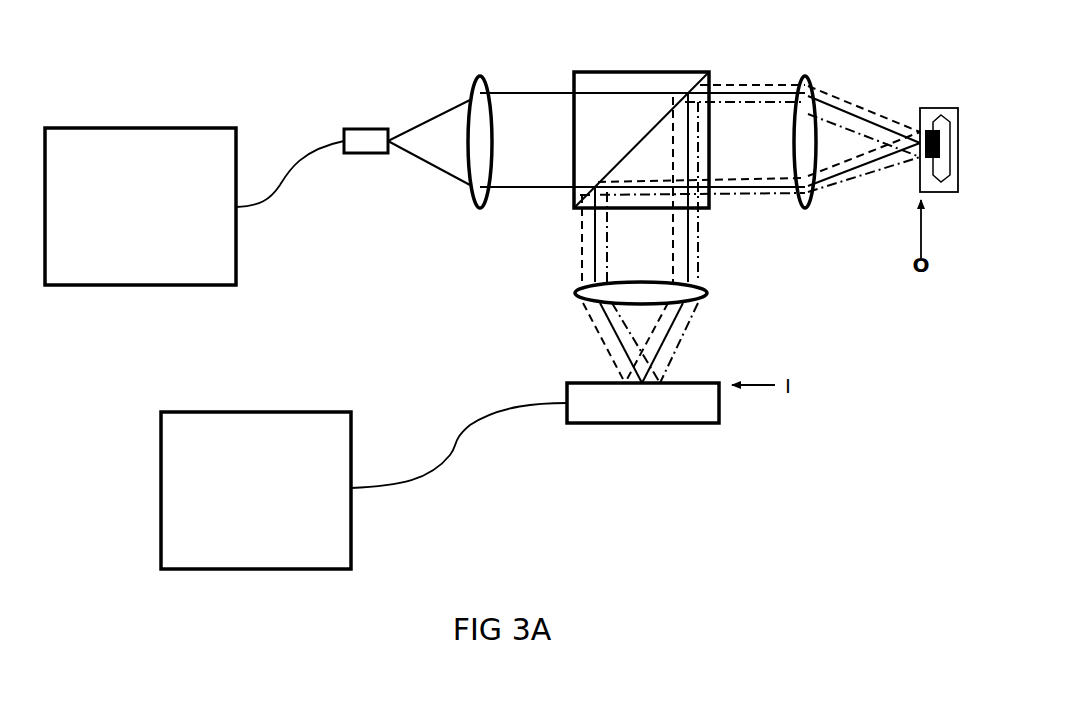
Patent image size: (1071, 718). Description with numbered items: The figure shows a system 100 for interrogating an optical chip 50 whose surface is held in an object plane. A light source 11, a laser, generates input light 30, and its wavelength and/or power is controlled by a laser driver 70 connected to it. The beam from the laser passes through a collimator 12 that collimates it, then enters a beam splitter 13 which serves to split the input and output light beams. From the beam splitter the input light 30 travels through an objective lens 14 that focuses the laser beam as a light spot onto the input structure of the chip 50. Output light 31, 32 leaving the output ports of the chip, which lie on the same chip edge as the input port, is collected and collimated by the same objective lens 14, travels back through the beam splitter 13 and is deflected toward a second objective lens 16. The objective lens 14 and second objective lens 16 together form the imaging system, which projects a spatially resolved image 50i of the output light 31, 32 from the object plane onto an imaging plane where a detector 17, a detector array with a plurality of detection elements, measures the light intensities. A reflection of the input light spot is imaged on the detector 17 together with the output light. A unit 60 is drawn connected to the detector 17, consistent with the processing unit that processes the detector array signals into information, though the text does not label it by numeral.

The system 100 is at (145, 80).
The laser driver 70 is at (184, 162).
The light source 11 is at (353, 125).
The collimator 12 is at (468, 68).
The beam splitter 13 is at (629, 58).
The objective lens 14 is at (790, 67).
The input light 30 is at (865, 113).
The output light 32 is at (828, 90).
The output light 31 is at (828, 190).
The optical chip 50 is at (925, 103).
The second objective lens 16 is at (731, 305).
The spatially resolved image 50i is at (594, 364).
The detector 17 is at (630, 414).
The processing unit 60 is at (299, 447).